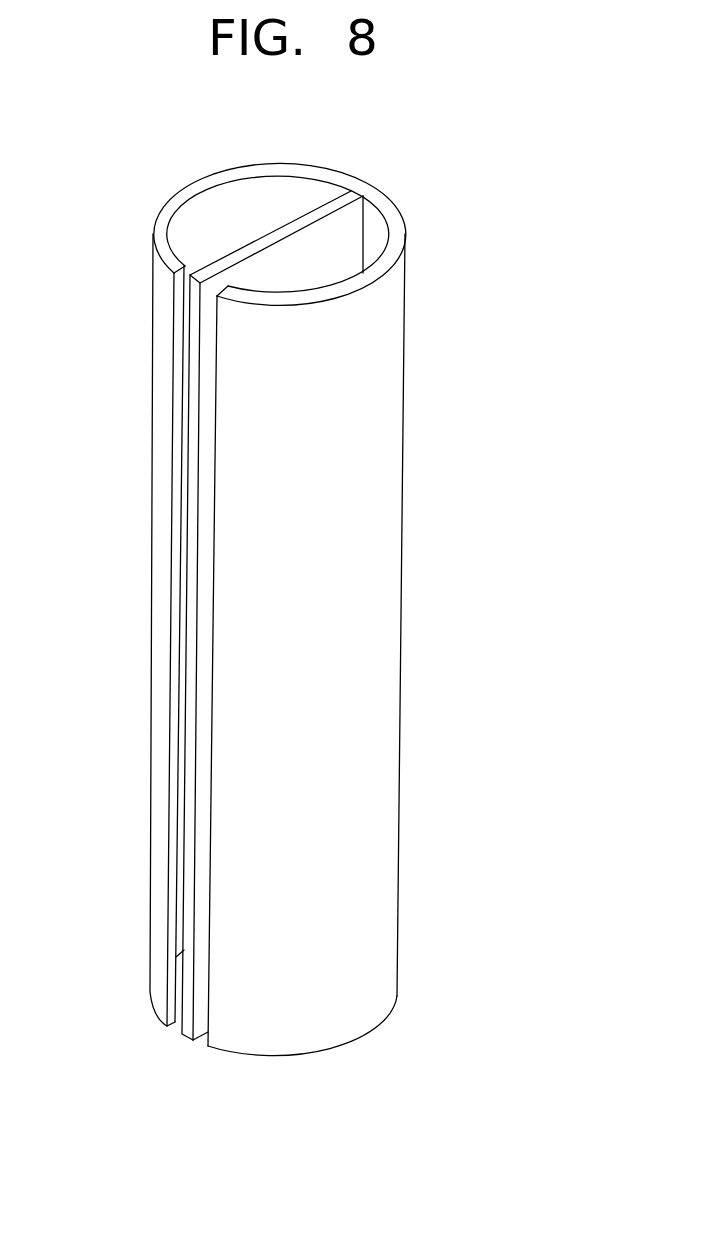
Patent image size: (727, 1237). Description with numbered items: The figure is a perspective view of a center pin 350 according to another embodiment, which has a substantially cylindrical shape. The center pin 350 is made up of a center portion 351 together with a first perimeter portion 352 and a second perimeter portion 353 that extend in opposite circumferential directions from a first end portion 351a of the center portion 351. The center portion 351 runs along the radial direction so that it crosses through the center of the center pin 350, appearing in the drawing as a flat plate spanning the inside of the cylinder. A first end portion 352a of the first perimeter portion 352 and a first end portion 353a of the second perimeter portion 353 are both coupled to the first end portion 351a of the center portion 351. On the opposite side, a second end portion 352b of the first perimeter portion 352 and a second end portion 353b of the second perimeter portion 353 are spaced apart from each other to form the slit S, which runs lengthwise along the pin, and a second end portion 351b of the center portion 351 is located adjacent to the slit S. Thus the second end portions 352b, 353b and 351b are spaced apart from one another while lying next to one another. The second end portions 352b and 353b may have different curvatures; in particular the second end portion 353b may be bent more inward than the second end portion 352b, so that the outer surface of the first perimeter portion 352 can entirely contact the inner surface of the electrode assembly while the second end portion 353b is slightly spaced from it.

The center pin 350 is at (441, 262).
The center portion 351 is at (267, 240).
The first end portion of the center portion 351a is at (355, 186).
The second end portion of the center portion 351b is at (186, 276).
The first perimeter portion 352 is at (198, 179).
The first end portion of the first perimeter portion 352a is at (298, 165).
The second end portion of the first perimeter portion 352b is at (166, 251).
The second perimeter portion 353 is at (352, 293).
The first end portion of the second perimeter portion 353a is at (395, 208).
The second end portion of the second perimeter portion 353b is at (222, 294).
The slit S is at (178, 445).